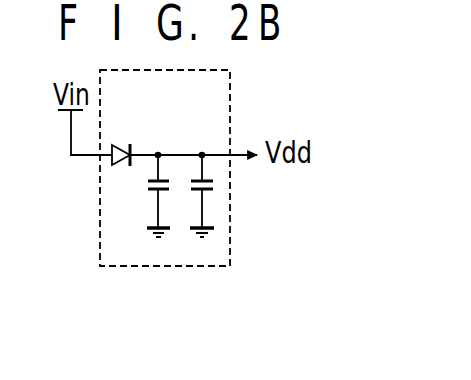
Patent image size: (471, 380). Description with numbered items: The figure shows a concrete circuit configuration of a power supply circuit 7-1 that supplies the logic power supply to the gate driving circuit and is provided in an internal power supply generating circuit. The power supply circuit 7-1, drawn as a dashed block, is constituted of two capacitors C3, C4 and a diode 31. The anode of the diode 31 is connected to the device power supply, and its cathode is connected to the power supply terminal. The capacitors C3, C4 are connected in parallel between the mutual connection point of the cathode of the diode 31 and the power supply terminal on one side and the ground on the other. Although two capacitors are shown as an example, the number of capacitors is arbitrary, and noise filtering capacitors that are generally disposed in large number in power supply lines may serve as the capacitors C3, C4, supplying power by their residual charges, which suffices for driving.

The diode 31 is at (126, 146).
The capacitor C3 is at (144, 187).
The capacitor C4 is at (215, 188).
The power supply circuit 7-1 is at (168, 267).